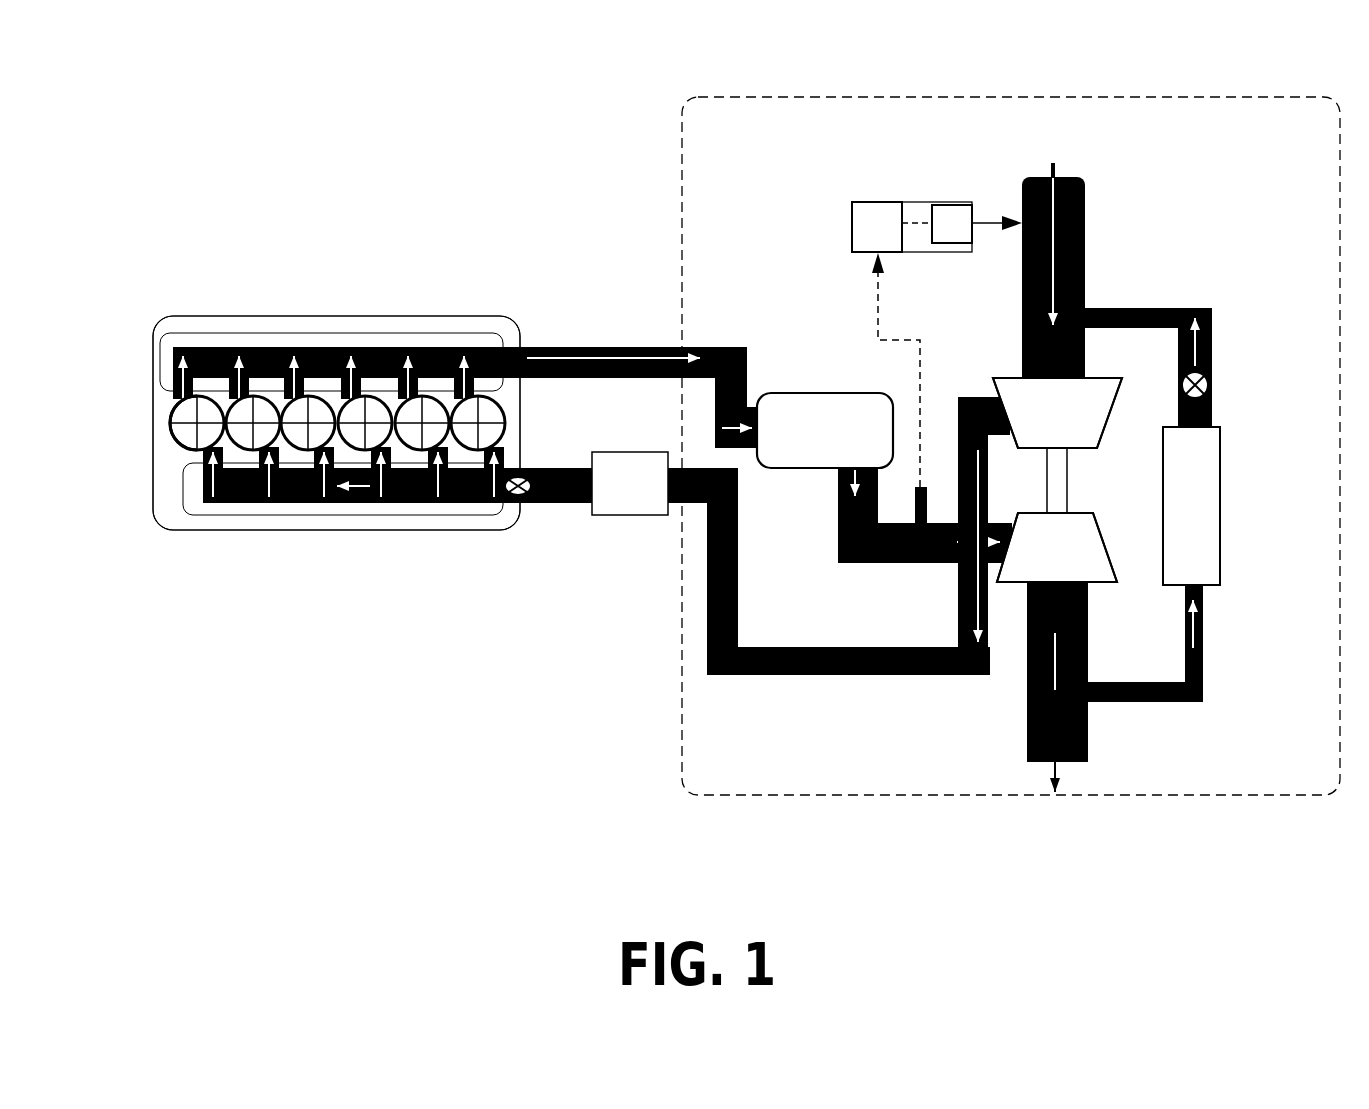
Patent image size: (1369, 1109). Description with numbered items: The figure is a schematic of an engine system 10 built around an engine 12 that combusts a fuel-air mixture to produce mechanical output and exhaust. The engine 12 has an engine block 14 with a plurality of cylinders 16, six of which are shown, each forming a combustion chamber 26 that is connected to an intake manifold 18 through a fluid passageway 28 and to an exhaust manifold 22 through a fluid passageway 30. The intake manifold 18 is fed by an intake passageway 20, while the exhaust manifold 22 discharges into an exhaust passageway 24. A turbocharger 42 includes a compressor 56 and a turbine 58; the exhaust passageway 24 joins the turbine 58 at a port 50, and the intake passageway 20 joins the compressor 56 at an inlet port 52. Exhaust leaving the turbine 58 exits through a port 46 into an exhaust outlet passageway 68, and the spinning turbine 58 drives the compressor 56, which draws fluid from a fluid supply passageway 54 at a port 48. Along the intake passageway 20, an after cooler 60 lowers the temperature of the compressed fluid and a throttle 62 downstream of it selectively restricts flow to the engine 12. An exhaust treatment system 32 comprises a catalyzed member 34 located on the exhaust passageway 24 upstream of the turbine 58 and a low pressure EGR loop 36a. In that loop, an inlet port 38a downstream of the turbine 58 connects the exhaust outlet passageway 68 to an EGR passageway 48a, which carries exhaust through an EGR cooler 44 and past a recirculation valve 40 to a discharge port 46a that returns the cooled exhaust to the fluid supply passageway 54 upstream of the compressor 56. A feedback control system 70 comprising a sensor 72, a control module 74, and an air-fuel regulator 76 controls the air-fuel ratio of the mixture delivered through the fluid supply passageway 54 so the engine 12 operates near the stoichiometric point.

The engine system 10 is at (268, 143).
The engine 12 is at (182, 278).
The engine block 14 is at (289, 532).
The cylinders 16 is at (263, 503).
The intake manifold 18 is at (210, 517).
The intake passageway 20 is at (391, 505).
The exhaust manifold 22 is at (254, 336).
The exhaust passageway 24 is at (606, 347).
The combustion chamber 26 is at (318, 413).
The fluid passageway 28 is at (200, 455).
The fluid passageway 30 is at (175, 402).
The exhaust treatment system 32 is at (680, 740).
The catalyzed member 34 is at (852, 393).
The low pressure EGR loop 36a is at (1230, 688).
The inlet port 38a is at (1090, 703).
The recirculation valve 40 is at (1212, 375).
The turbocharger 42 is at (1000, 358).
The EGR cooler 44 is at (1220, 492).
The port 46 is at (1063, 580).
The discharge port 46a is at (1085, 307).
The port 48 is at (1072, 378).
The EGR passageway 48a is at (1163, 703).
The port 50 is at (1010, 543).
The inlet port 52 is at (1015, 432).
The fluid supply passageway 54 is at (1085, 237).
The compressor 56 is at (1103, 413).
The turbine 58 is at (1098, 538).
The after cooler 60 is at (625, 519).
The throttle 62 is at (497, 505).
The exhaust outlet passageway 68 is at (1027, 695).
The feedback control system 70 is at (866, 180).
The sensor 72 is at (927, 487).
The control module 74 is at (852, 223).
The air-fuel regulator 76 is at (950, 205).